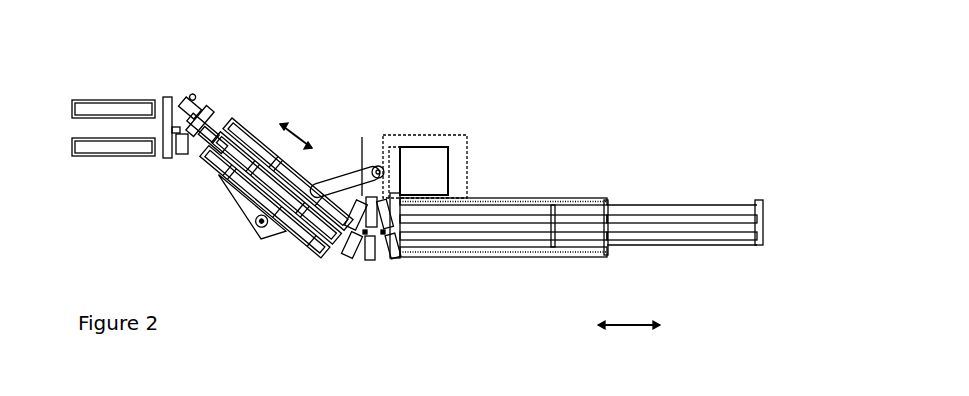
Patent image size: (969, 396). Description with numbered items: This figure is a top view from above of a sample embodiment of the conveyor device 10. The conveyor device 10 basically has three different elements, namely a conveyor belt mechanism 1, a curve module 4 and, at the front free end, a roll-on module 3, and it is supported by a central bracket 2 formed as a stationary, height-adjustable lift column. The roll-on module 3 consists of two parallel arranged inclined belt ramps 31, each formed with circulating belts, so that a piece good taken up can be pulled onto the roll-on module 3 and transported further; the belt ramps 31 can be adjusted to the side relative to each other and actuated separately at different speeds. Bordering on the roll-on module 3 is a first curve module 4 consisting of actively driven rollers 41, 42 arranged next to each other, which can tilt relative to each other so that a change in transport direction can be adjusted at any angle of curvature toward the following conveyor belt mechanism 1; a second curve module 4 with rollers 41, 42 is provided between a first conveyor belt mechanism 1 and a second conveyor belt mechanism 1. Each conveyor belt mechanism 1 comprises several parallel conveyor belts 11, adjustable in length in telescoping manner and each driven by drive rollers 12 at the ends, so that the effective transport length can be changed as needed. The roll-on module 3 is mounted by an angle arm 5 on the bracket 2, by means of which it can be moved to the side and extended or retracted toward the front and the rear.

The conveyor belt mechanism 1 is at (302, 124).
The bracket 2 is at (448, 143).
The roll-on module 3 is at (108, 171).
The inclined belt ramps 31 is at (90, 115).
The curve module 4 is at (275, 198).
The rollers 41 is at (184, 103).
The rollers 42 is at (173, 151).
The angle arm 5 is at (294, 187).
The conveyor device 10 is at (586, 210).
The conveyor belts 11 is at (488, 200).
The drive rollers 12 is at (556, 146).